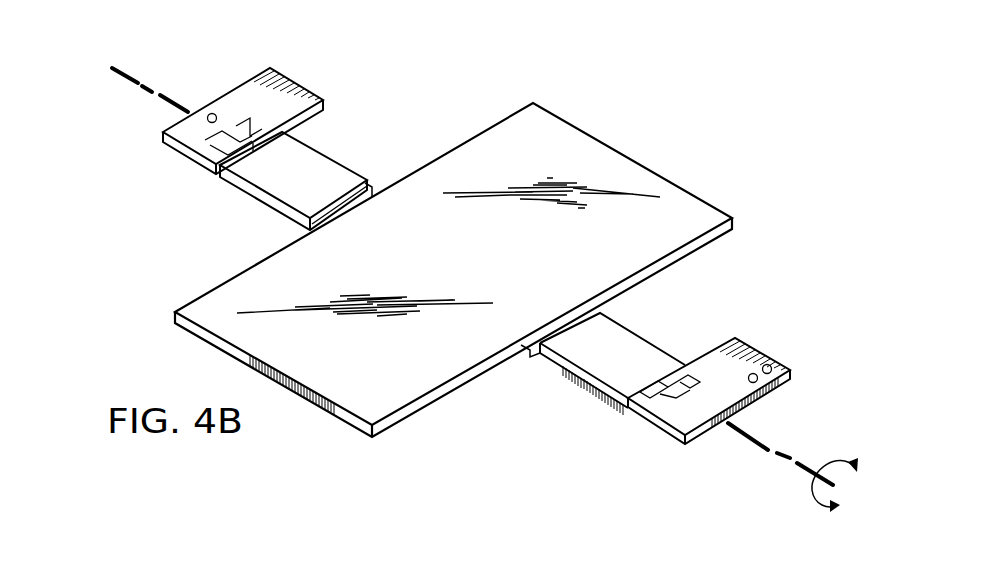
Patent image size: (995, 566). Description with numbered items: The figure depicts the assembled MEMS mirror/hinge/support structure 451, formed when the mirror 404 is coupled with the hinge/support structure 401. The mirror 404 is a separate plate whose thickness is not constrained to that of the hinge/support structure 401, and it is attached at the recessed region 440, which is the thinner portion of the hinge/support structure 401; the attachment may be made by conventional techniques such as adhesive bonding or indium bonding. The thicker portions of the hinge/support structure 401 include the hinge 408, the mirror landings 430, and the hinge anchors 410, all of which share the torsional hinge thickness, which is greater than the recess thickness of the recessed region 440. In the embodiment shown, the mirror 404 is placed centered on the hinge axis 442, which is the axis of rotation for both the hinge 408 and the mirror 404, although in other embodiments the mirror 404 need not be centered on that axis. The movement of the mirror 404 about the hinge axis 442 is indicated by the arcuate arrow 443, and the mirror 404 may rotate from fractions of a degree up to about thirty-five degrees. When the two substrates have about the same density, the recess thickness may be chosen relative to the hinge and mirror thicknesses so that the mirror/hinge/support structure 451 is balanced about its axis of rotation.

The hinge/support structure 401 is at (195, 72).
The mirror 404 is at (500, 123).
The hinge 408 is at (223, 142).
The hinge anchors 410 is at (305, 92).
The mirror landings 430 is at (260, 175).
The recessed region 440 is at (372, 190).
The hinge axis 442 is at (122, 77).
The arcuate arrow 443 is at (810, 497).
The mirror/hinge/support structure 451 is at (642, 124).